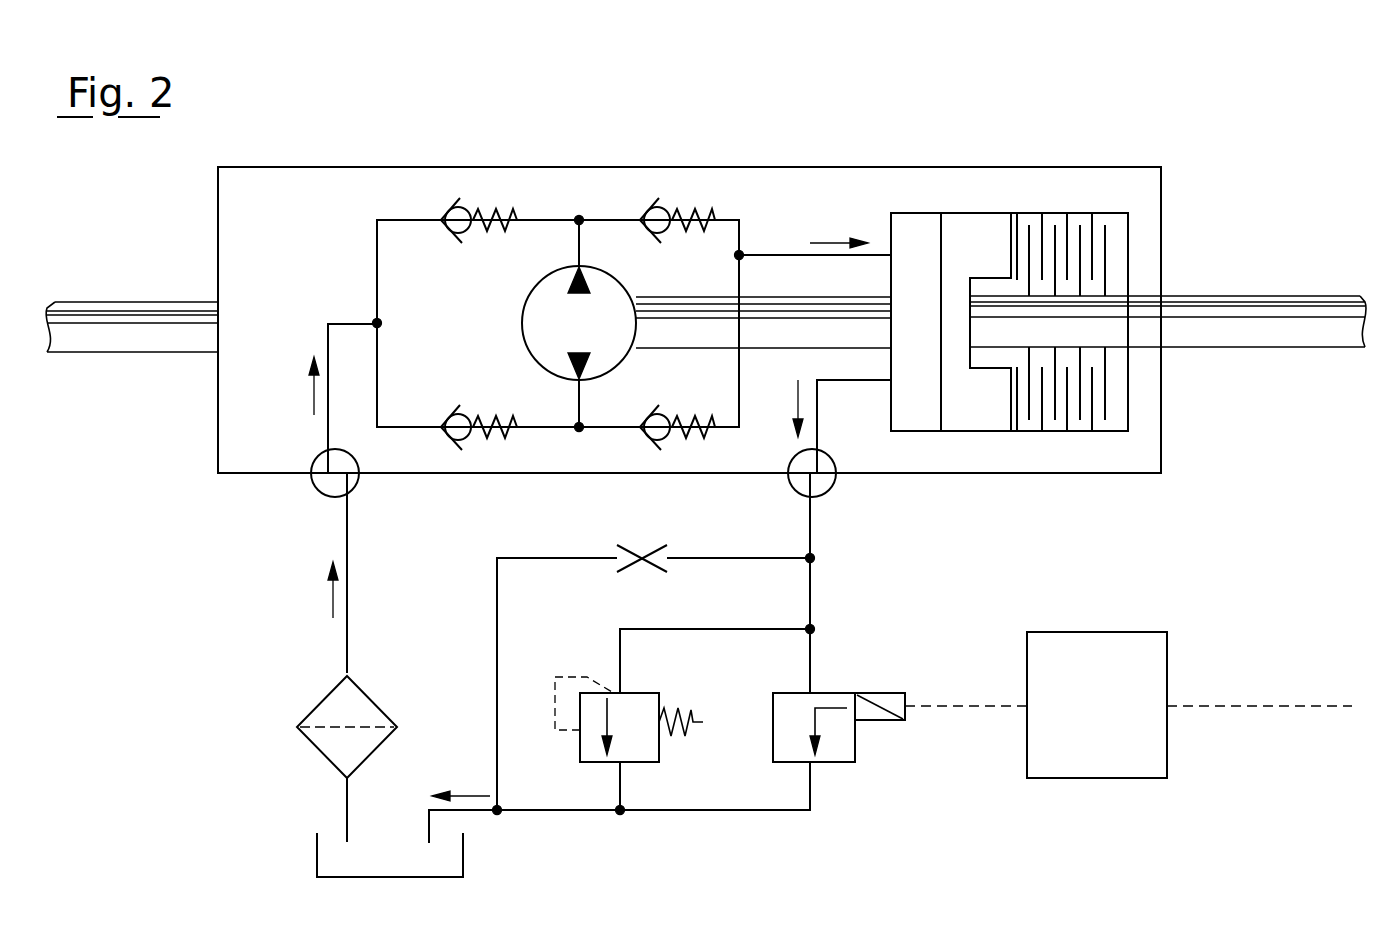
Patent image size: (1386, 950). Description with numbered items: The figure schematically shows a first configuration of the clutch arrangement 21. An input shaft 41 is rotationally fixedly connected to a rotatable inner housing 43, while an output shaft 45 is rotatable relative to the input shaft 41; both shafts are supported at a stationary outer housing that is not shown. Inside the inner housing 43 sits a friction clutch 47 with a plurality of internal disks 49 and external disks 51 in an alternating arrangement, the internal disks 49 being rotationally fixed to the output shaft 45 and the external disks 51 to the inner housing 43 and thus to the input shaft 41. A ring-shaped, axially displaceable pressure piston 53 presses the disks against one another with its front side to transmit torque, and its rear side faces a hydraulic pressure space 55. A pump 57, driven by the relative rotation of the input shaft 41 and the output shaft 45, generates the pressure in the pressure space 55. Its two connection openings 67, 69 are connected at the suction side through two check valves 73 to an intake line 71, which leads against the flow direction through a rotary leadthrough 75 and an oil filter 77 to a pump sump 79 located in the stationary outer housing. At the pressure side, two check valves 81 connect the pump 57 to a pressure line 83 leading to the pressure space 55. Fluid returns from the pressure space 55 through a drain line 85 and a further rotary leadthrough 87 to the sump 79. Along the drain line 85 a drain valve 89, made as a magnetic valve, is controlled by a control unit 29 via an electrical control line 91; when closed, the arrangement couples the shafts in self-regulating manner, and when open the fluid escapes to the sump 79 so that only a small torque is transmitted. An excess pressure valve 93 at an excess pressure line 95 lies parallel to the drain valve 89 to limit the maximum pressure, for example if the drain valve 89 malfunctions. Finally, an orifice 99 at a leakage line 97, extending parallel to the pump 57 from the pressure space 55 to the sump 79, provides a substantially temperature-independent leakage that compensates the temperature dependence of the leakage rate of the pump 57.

The clutch arrangement 21 is at (516, 108).
The control unit 29 is at (1082, 717).
The input shaft 41 is at (105, 339).
The inner housing 43 is at (273, 203).
The output shaft 45 is at (1283, 328).
The friction clutch 47 is at (1054, 192).
The internal disks 49 is at (1083, 282).
The external disks 51 is at (1097, 220).
The pressure piston 53 is at (971, 232).
The hydraulic pressure space 55 is at (908, 240).
The pump 57 is at (522, 323).
The connection opening 67 is at (578, 269).
The connection opening 69 is at (578, 378).
The intake line 71 is at (328, 339).
The check valves 73 is at (487, 200).
The rotary leadthrough 75 is at (315, 490).
The oil filter 77 is at (320, 700).
The pump sump 79 is at (317, 858).
The check valves 81 is at (688, 198).
The pressure line 83 is at (778, 252).
The drain line 85 is at (817, 427).
The rotary leadthrough 87 is at (832, 487).
The drain valve 89 is at (855, 745).
The electrical control line 91 is at (975, 708).
The excess pressure valve 93 is at (643, 693).
The excess pressure line 95 is at (650, 629).
The leakage line 97 is at (716, 556).
The orifice 99 is at (640, 550).